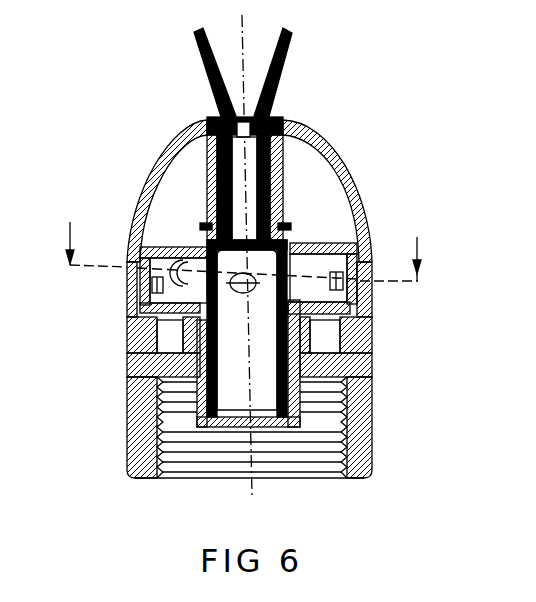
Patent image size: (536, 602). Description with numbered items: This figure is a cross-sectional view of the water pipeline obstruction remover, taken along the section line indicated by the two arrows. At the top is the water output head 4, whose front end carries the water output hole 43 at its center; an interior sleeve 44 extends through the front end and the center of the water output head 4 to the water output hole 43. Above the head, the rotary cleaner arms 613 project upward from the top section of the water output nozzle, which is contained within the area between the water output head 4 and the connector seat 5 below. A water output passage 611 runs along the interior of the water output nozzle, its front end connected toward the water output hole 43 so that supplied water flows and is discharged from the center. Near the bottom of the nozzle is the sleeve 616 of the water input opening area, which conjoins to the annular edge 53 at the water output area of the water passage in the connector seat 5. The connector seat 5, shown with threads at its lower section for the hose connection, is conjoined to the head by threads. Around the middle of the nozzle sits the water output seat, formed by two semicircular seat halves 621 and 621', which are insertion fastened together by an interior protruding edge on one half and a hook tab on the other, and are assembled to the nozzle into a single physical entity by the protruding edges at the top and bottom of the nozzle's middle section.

The water output head 4 is at (203, 125).
The water output hole 43 is at (247, 122).
The rotary cleaner arms 613 is at (283, 50).
The interior sleeve 44 is at (283, 187).
The semicircular seat half 621' is at (136, 234).
The semicircular seat half 621 is at (355, 249).
The sleeve 616 is at (183, 340).
The water output passage 611 is at (355, 362).
The connector seat 5 is at (370, 420).
The annular edge 53 is at (200, 427).